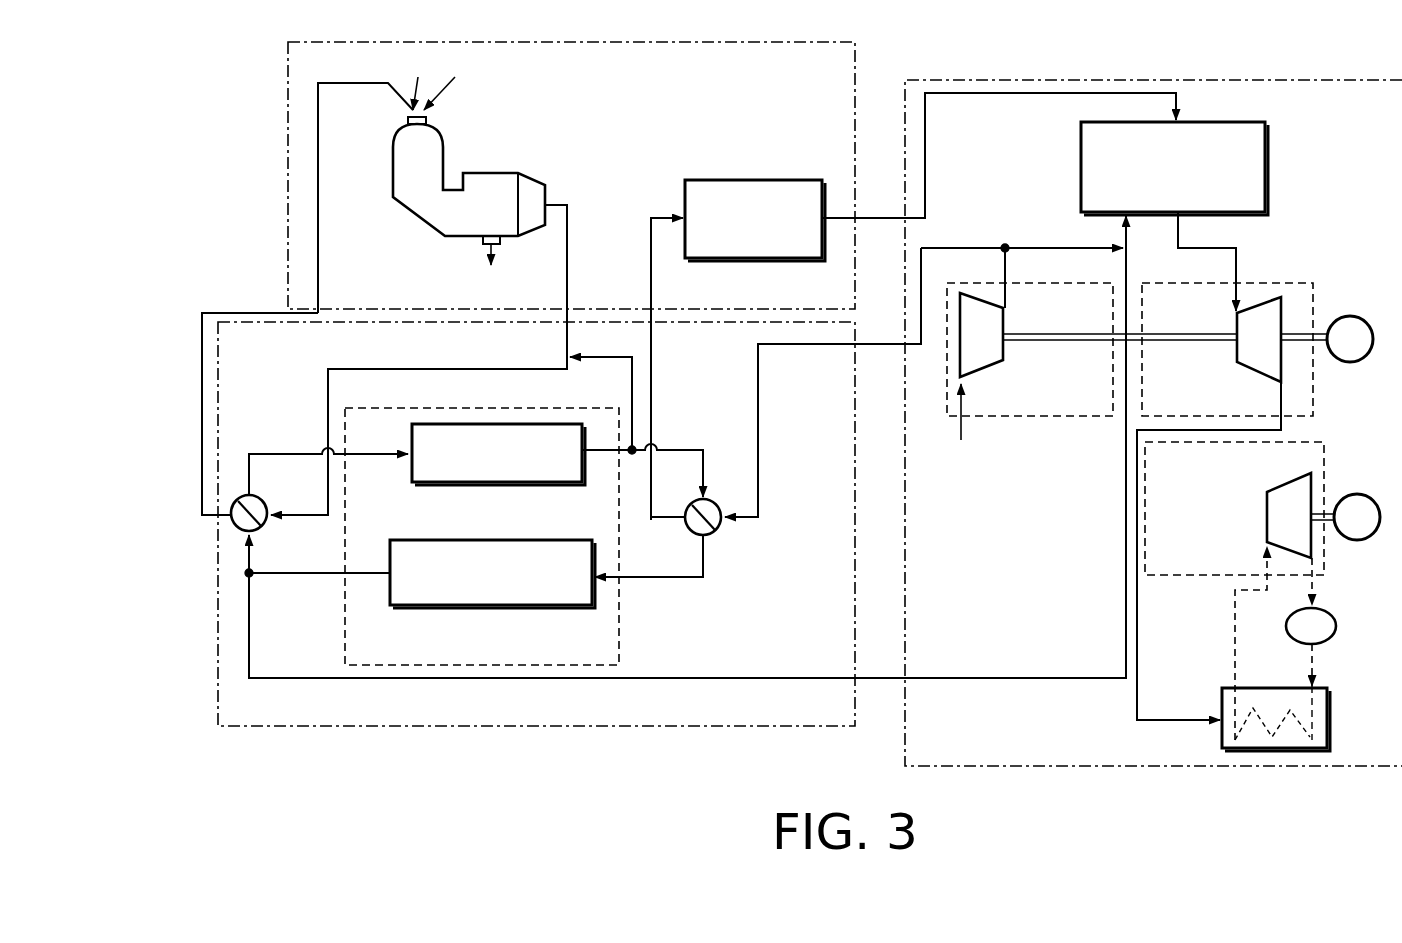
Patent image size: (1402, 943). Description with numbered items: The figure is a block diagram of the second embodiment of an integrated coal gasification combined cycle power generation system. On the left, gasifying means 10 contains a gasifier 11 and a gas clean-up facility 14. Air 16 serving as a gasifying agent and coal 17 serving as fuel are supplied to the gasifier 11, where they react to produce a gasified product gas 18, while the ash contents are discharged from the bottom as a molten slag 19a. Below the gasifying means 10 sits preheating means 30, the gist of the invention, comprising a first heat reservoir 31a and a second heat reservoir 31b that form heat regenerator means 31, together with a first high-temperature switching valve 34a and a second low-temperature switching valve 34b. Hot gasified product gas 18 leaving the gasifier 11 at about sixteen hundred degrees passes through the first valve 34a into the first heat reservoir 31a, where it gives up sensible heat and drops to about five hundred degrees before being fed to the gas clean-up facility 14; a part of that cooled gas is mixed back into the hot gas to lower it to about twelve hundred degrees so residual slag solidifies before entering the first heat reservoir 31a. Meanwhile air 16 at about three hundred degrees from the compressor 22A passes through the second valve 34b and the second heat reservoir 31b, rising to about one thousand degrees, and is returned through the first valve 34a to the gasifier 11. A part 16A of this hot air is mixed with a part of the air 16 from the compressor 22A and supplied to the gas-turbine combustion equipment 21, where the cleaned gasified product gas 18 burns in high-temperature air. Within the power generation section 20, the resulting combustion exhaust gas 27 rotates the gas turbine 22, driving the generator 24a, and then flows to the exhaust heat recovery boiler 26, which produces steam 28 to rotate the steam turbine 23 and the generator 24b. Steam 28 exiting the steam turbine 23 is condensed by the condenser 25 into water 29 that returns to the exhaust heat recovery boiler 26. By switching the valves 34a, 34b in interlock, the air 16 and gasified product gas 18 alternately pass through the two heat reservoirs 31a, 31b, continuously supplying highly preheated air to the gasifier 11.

The gasifying means 10 is at (286, 68).
The gasifier 11 is at (515, 173).
The gas clean-up facility 14 is at (786, 180).
The air 16 is at (1050, 237).
The part of high-temperature air 16A is at (1126, 576).
The coal 17 is at (458, 88).
The gasified product gas 18 is at (567, 240).
The molten slag 19a is at (490, 243).
The power generation means 20 is at (1095, 80).
The gas-turbine combustion equipment 21 is at (1268, 165).
The gas turbine 22 is at (1313, 383).
The compressor 22A is at (1070, 420).
The steam turbine 23 is at (1203, 575).
The generator 24a is at (1351, 316).
The generator 24b is at (1355, 494).
The condenser 25 is at (1337, 628).
The exhaust heat recovery boiler 26 is at (1327, 715).
The combustion exhaust gas 27 is at (1210, 248).
The steam 28 is at (1318, 590).
The water 29 is at (1318, 666).
The preheating means 30 is at (217, 626).
The heat regenerator means 31 is at (622, 622).
The first heat reservoir 31a is at (567, 410).
The second heat reservoir 31b is at (572, 527).
The first high-temperature switching valve 34a is at (232, 527).
The second low-temperature switching valve 34b is at (718, 533).